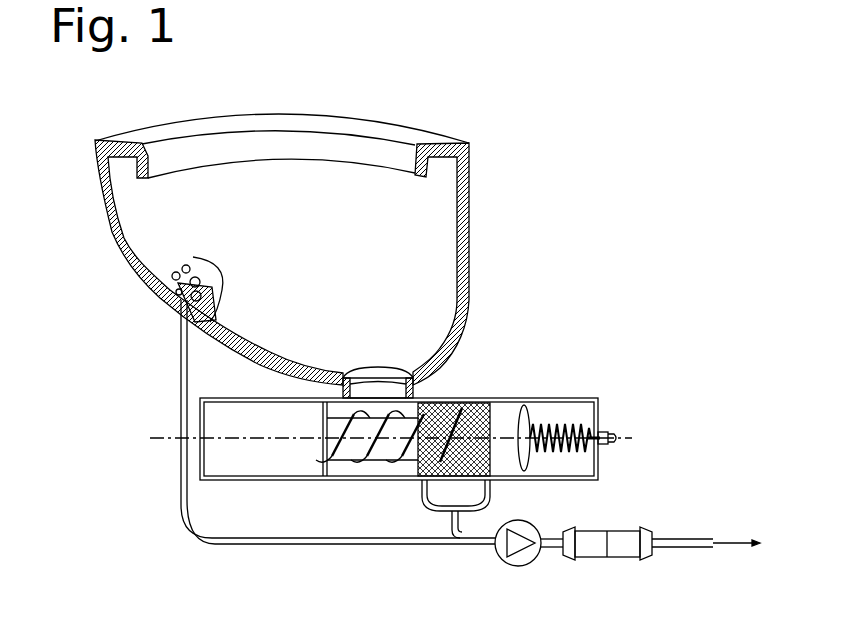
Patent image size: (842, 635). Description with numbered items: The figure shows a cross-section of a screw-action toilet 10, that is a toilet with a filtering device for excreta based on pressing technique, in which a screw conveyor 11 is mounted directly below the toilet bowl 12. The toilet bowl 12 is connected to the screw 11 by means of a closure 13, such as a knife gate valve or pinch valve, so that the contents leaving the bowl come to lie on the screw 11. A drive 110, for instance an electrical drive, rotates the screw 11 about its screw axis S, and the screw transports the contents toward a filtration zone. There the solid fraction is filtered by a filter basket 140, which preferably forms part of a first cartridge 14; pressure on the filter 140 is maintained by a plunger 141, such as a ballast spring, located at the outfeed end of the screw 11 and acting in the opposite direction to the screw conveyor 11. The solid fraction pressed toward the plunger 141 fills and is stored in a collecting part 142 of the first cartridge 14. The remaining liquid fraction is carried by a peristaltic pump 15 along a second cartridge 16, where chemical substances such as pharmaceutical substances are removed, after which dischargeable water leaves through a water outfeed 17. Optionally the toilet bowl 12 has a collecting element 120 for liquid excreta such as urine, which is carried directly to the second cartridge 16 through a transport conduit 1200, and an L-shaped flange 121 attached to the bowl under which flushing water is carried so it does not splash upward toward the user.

The screw-action toilet 10 is at (318, 306).
The toilet bowl 12 is at (140, 208).
The L-shaped flange 121 is at (177, 150).
The collecting element 120 is at (157, 298).
The transport conduit 1200 is at (184, 387).
The closure 13 is at (372, 382).
The screw conveyor 11 is at (409, 495).
The drive 110 is at (227, 463).
The first cartridge 14 is at (543, 421).
The filter basket 140 is at (483, 403).
The collecting part 142 is at (505, 413).
The plunger 141 is at (565, 456).
The screw axis S is at (630, 438).
The pump 15 is at (500, 553).
The second cartridge 16 is at (583, 547).
The water outfeed 17 is at (698, 542).